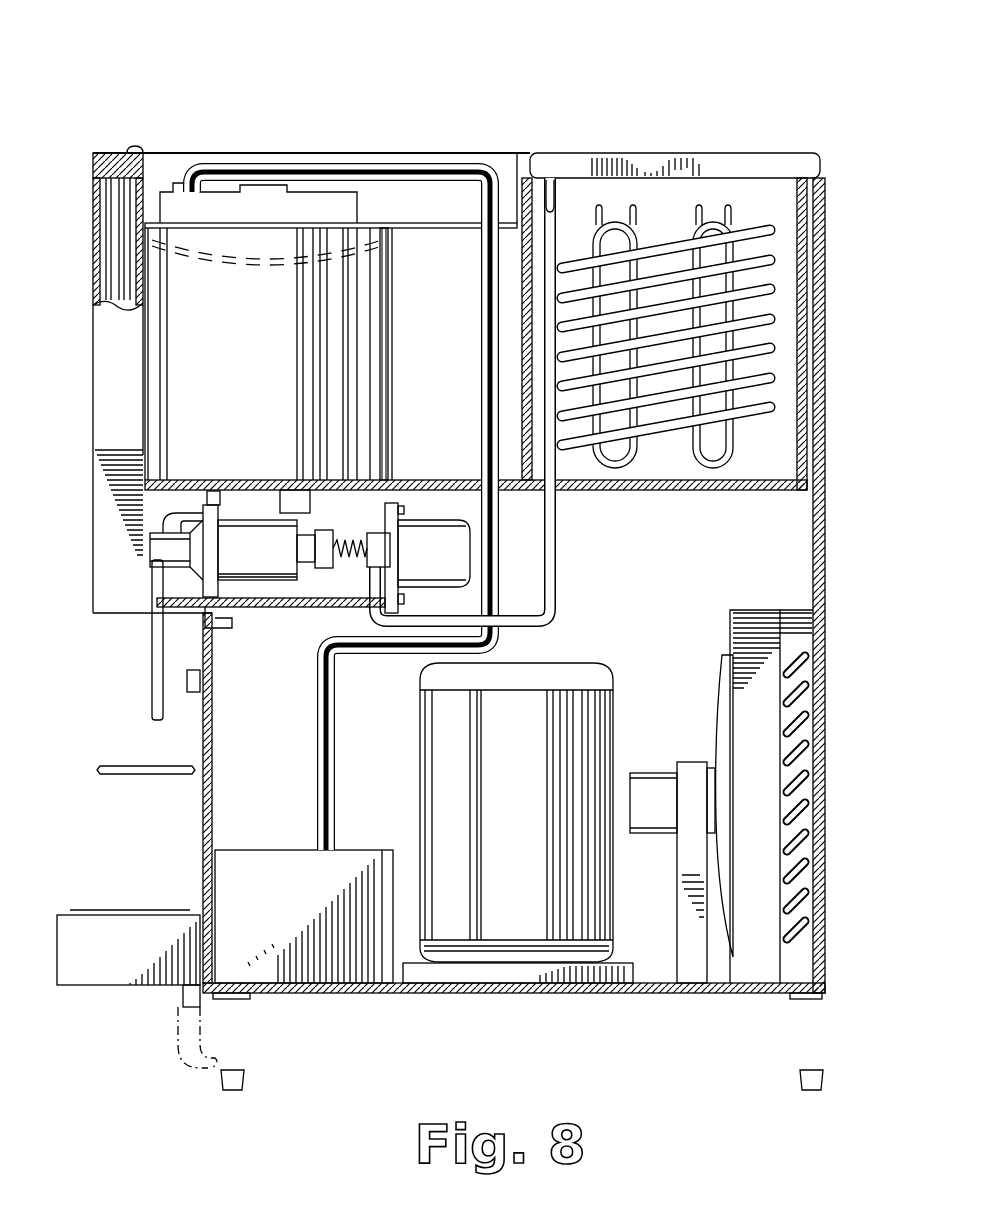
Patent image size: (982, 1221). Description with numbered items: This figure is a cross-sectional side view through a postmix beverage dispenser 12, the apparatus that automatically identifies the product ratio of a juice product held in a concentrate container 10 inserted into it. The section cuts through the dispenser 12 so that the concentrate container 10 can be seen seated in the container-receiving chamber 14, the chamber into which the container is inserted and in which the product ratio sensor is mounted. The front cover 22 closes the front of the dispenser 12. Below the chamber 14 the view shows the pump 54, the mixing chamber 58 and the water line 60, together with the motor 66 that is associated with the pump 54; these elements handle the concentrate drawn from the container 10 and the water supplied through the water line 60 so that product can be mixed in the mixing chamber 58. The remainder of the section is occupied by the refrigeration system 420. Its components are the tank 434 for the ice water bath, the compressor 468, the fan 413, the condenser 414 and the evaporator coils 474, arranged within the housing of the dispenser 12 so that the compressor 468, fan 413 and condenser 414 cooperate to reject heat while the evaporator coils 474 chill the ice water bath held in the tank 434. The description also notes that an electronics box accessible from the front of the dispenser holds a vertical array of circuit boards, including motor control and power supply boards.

The concentrate container 10 is at (252, 371).
The postmix beverage dispenser 12 is at (521, 142).
The container-receiving chamber 14 is at (145, 418).
The front cover 22 is at (110, 349).
The pump 54 is at (253, 543).
The mixing chamber 58 is at (150, 680).
The water line 60 is at (176, 512).
The motor 66 is at (437, 518).
The fan 413 is at (726, 705).
The condenser 414 is at (798, 662).
The refrigeration system 420 is at (700, 190).
The tank 434 is at (792, 192).
The compressor 468 is at (527, 708).
The evaporator coils 474 is at (724, 468).